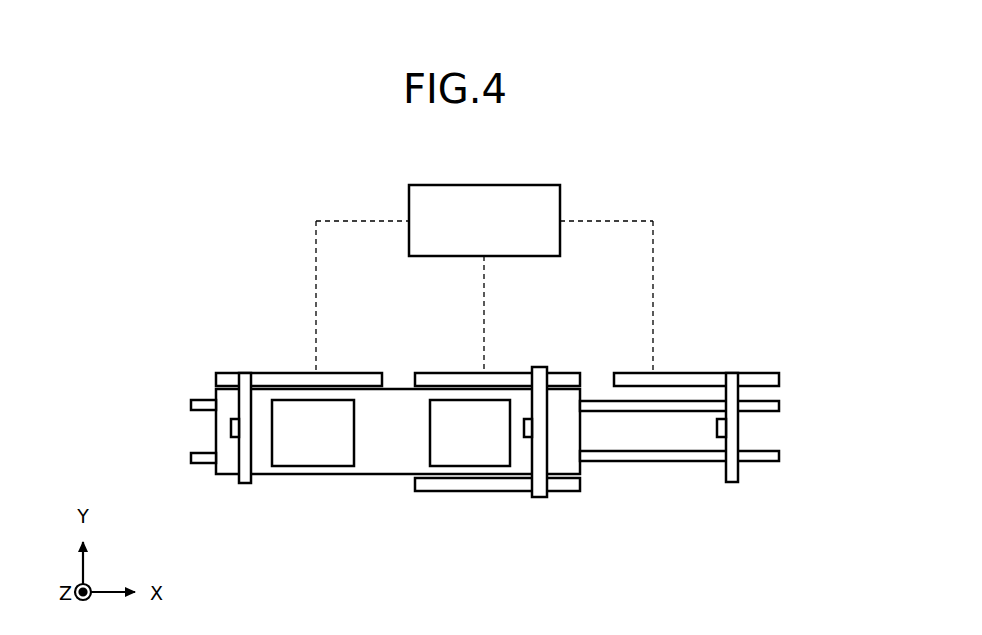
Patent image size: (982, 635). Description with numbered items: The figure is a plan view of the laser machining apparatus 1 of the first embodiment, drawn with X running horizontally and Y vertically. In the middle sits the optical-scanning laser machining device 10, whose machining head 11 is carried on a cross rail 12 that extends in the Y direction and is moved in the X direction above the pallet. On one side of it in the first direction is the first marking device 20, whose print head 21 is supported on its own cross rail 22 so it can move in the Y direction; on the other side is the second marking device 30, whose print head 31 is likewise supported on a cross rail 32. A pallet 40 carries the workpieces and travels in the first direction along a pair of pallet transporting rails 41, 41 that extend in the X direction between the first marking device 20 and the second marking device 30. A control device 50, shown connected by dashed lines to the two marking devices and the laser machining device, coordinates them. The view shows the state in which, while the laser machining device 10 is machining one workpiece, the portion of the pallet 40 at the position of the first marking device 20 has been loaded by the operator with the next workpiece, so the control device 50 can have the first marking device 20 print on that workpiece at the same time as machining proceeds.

The laser machining apparatus 1 is at (112, 214).
The control device 50 is at (508, 185).
The pallet 40 is at (390, 474).
The pallet transporting rail 41 is at (806, 454).
The first marking device 20 is at (214, 335).
The print head 21 is at (231, 428).
The cross rail 22 is at (245, 484).
The optical-scanning laser machining device 10 is at (561, 336).
The machining head 11 is at (524, 426).
The cross rail 12 is at (540, 497).
The second marking device 30 is at (788, 336).
The print head 31 is at (717, 428).
The cross rail 32 is at (732, 482).